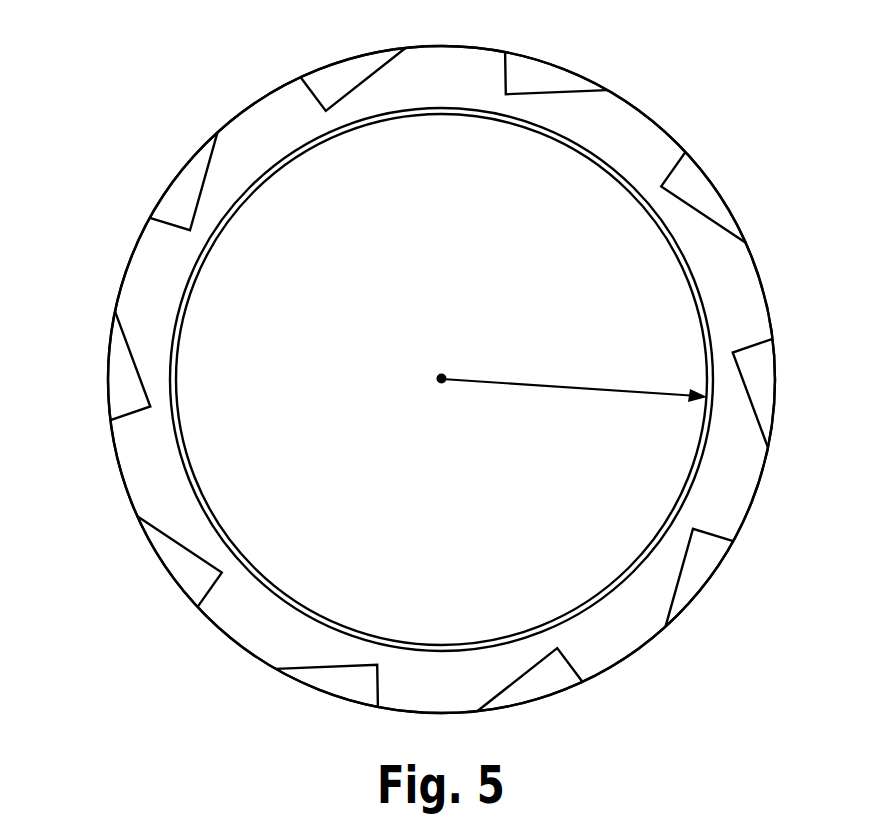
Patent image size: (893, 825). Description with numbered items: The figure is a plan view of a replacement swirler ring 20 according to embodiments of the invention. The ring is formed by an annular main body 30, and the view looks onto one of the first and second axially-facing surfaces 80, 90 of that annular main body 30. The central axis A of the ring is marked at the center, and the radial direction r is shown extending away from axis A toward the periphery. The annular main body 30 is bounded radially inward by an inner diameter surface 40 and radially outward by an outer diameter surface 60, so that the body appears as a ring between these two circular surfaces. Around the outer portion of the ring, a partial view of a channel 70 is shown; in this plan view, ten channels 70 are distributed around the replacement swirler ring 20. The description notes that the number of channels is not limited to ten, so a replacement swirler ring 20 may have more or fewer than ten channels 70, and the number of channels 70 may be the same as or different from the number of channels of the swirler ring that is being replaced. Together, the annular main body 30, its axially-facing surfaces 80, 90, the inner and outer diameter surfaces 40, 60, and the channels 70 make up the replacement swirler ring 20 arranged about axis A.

The replacement swirler ring 20 is at (236, 72).
The annular main body 30 is at (235, 164).
The annular main body inner diameter surface 40 is at (662, 225).
The annular main body outer diameter surface 60 is at (758, 279).
The channel 70 is at (128, 383).
The first axially-facing surface 80 is at (125, 202).
The second axially-facing surface 90 is at (145, 273).
The axis A is at (426, 389).
The radial direction r is at (574, 371).